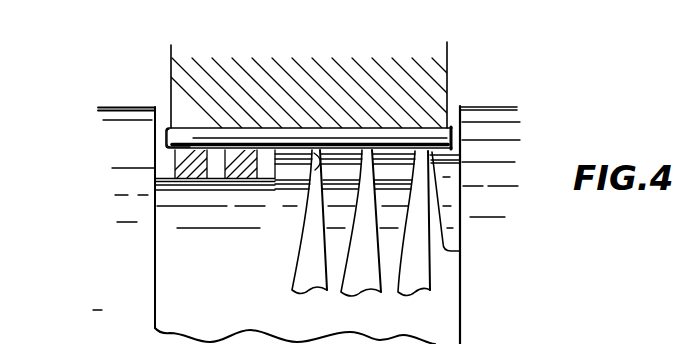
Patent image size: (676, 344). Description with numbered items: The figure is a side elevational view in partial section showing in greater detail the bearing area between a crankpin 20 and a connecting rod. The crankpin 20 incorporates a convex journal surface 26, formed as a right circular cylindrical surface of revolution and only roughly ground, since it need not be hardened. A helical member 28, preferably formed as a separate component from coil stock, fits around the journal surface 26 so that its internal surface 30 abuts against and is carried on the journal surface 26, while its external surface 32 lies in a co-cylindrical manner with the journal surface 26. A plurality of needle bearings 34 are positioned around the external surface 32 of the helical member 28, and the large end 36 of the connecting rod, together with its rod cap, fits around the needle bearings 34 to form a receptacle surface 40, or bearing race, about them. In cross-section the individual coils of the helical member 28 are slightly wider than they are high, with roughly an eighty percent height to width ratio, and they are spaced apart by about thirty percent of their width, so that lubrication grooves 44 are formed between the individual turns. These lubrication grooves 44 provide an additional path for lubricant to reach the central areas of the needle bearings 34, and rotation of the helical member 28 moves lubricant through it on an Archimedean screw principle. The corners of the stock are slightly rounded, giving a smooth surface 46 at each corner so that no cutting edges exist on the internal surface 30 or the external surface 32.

The crankpin 20 is at (173, 259).
The journal surface 26 is at (422, 179).
The helical member 28 is at (415, 281).
The internal surface 30 is at (193, 182).
The external surface 32 is at (393, 148).
The needle bearings 34 is at (382, 135).
The large end 36 is at (202, 117).
The receptacle surface 40 is at (172, 145).
The lubrication grooves 44 is at (216, 172).
The smooth surface 46 is at (373, 158).